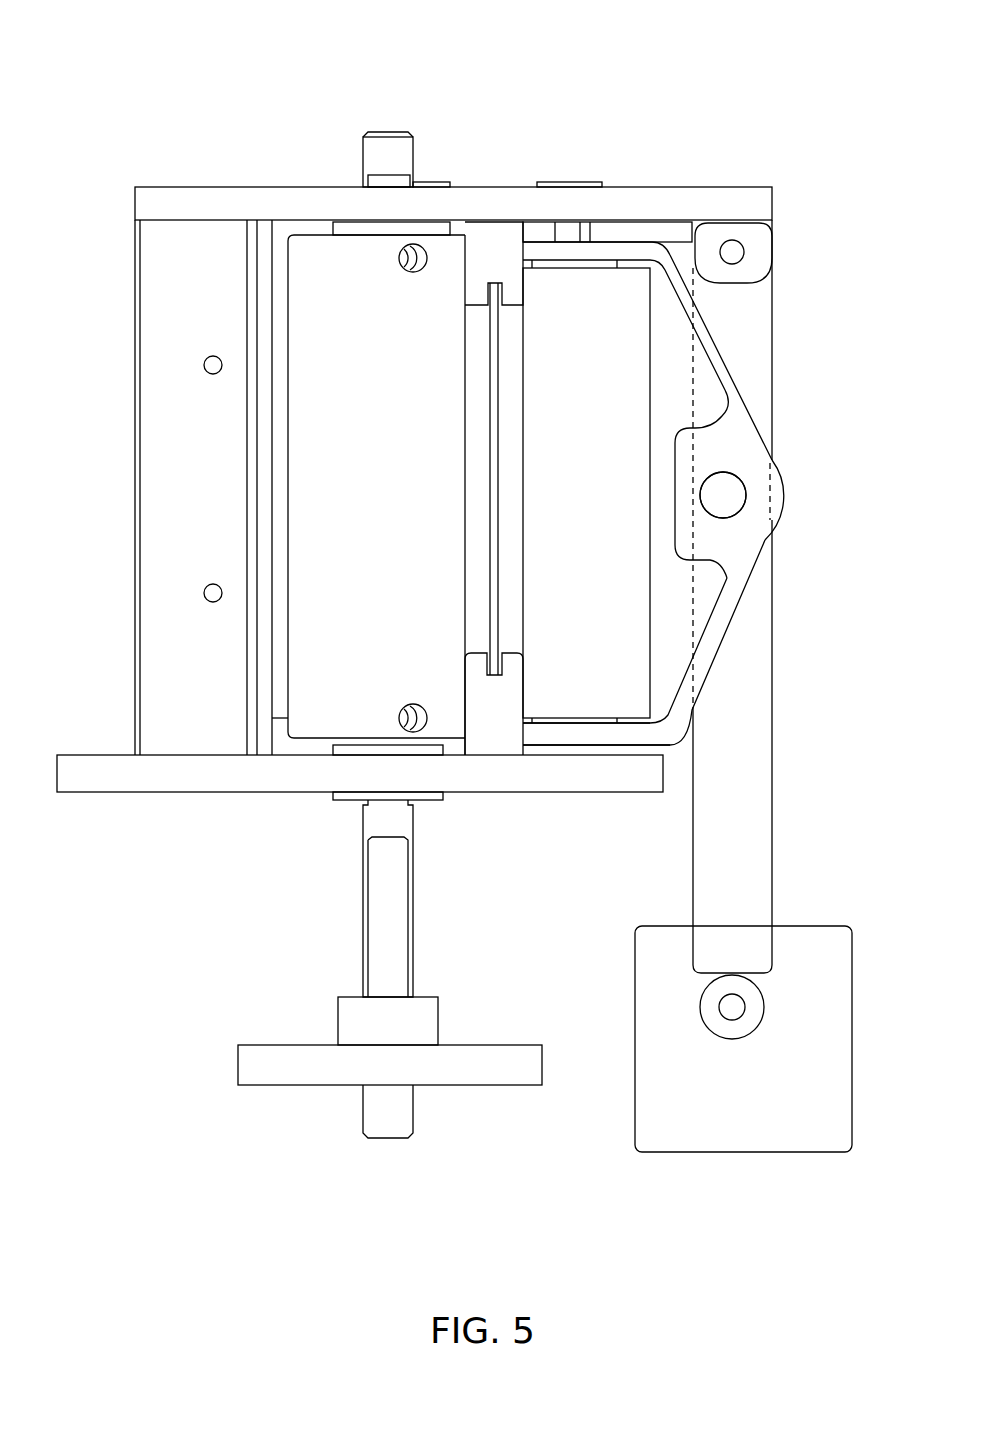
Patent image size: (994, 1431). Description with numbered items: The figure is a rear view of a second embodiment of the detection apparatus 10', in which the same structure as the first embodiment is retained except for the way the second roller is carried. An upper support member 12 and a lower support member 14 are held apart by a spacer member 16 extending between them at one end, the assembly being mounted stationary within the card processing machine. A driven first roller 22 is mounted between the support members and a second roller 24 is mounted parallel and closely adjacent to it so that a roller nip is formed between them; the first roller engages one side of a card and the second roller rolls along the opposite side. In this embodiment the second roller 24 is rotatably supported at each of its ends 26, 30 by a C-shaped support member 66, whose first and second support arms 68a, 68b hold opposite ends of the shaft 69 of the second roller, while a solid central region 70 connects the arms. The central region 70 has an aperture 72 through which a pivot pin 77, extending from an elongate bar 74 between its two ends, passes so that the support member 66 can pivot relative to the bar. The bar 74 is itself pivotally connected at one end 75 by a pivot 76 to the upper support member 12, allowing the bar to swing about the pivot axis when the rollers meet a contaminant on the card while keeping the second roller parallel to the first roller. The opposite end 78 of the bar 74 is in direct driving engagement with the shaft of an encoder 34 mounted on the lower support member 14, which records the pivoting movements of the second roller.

The detection apparatus 10' is at (565, 81).
The upper support member 12 is at (197, 205).
The lower support member 14 is at (140, 773).
The spacer member 16 is at (160, 352).
The first roller 22 is at (310, 268).
The second roller 24 is at (622, 292).
The end of second roller 26 is at (537, 307).
The end of second roller 30 is at (635, 722).
The encoder 34 is at (760, 1128).
The C-shaped support member 66 is at (797, 481).
The first support arm 68a is at (672, 253).
The second support arm 68b is at (570, 740).
The shaft of second roller 69 is at (568, 230).
The central region 70 is at (735, 453).
The aperture 72 is at (720, 497).
The elongate bar 74 is at (740, 655).
The end of bar 75 is at (755, 330).
The pivot 76 is at (733, 252).
The pivot pin 77 is at (720, 498).
The opposite end of bar 78 is at (740, 950).